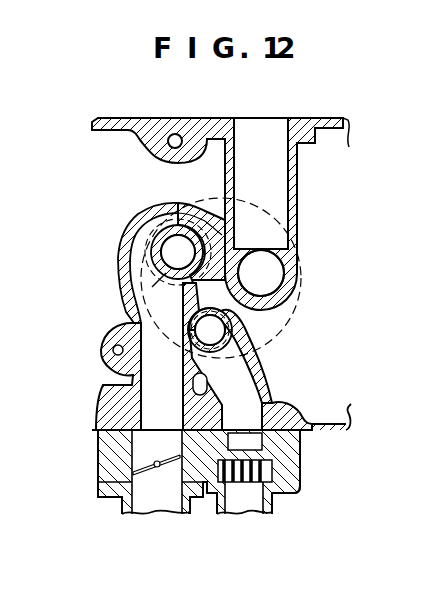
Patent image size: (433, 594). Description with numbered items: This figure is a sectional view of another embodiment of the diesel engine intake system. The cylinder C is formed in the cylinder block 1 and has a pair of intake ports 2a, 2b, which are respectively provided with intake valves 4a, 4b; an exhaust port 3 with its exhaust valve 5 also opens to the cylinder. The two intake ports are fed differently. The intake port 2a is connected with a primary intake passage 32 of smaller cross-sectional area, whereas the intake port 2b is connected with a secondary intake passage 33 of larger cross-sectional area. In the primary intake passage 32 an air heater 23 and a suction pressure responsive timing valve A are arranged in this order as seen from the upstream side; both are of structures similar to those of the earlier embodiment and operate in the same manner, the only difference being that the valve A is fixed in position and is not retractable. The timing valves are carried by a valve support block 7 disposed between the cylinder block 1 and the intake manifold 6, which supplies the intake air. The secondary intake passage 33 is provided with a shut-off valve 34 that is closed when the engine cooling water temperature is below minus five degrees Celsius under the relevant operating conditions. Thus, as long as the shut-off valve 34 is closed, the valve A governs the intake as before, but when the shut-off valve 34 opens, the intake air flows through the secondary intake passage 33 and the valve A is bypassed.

The cylinder block 1 is at (120, 117).
The exhaust port 3 is at (296, 192).
The exhaust valve 5 is at (293, 235).
The cylinder C is at (294, 297).
The intake port 2a is at (223, 328).
The intake port 2b is at (140, 283).
The intake valve 4a is at (195, 353).
The intake valve 4b is at (135, 258).
The primary intake passage 32 is at (253, 396).
The secondary intake passage 33 is at (103, 385).
The shut-off valve 34 is at (152, 474).
The valve support block 7 is at (301, 464).
The timing valve A is at (253, 437).
The intake manifold 6 is at (299, 492).
The air heater 23 is at (240, 485).